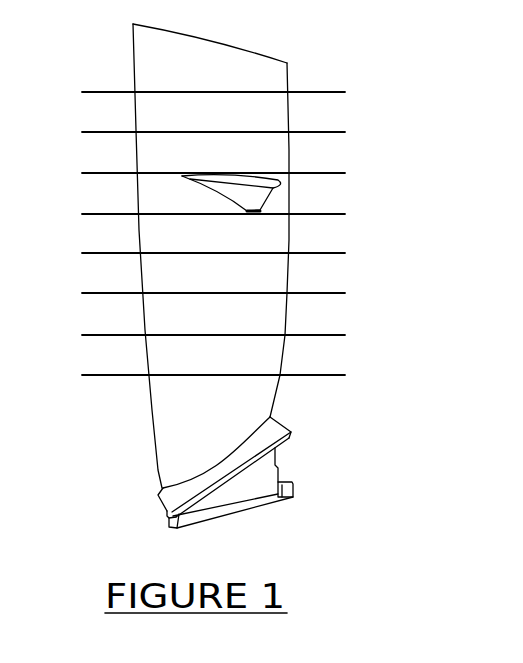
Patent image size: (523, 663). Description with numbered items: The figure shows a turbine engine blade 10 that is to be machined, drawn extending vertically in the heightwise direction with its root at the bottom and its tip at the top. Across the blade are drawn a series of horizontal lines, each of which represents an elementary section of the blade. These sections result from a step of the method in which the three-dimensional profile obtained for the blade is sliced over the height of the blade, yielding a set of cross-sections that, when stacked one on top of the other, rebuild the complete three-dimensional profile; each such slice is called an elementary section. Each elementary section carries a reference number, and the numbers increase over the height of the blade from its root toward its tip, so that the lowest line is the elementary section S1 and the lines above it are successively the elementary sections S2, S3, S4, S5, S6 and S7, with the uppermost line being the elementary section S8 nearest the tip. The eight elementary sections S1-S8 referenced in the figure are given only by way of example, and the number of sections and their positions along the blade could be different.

The turbine engine blade 10 is at (382, 195).
The elementary section S1 is at (193, 378).
The elementary section S2 is at (193, 338).
The elementary section S3 is at (193, 296).
The elementary section S4 is at (193, 256).
The elementary section S5 is at (193, 217).
The elementary section S6 is at (193, 176).
The elementary section S7 is at (193, 135).
The elementary section S8 is at (193, 95).